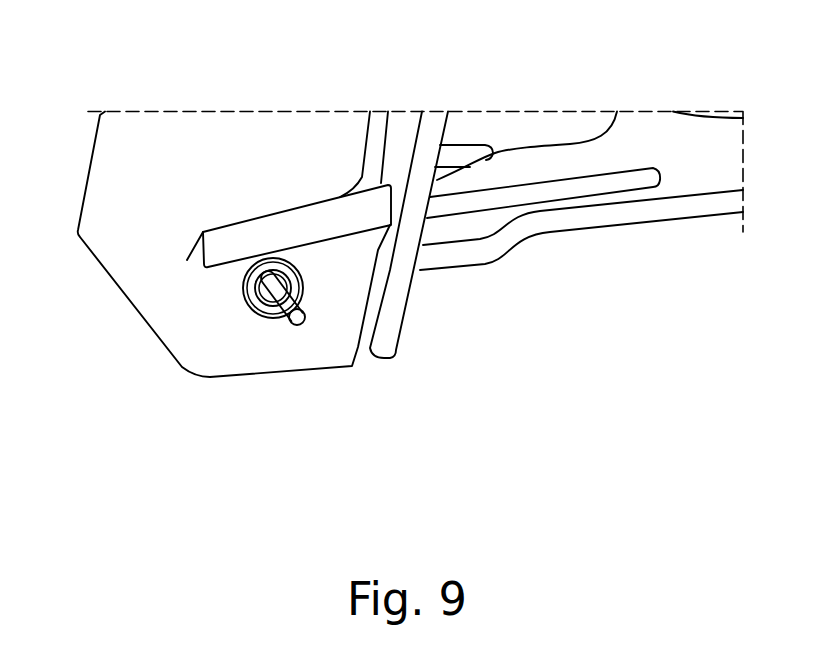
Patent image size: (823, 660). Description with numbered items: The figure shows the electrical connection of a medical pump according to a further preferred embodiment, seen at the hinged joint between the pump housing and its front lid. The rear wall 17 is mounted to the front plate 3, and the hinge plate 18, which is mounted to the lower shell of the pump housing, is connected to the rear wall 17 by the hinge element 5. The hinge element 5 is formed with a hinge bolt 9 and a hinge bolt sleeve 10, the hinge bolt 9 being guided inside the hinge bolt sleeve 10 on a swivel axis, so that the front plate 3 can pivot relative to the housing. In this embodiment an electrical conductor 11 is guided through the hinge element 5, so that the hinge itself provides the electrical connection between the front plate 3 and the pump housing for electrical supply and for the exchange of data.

The front lid 3 is at (102, 178).
The hinge element 5 is at (236, 312).
The hinge bolt 9 is at (243, 277).
The hinge bolt sleeve 10 is at (303, 285).
The electrical conductor 11 is at (632, 182).
The rear wall 17 is at (404, 142).
The hinge plate 18 is at (672, 210).